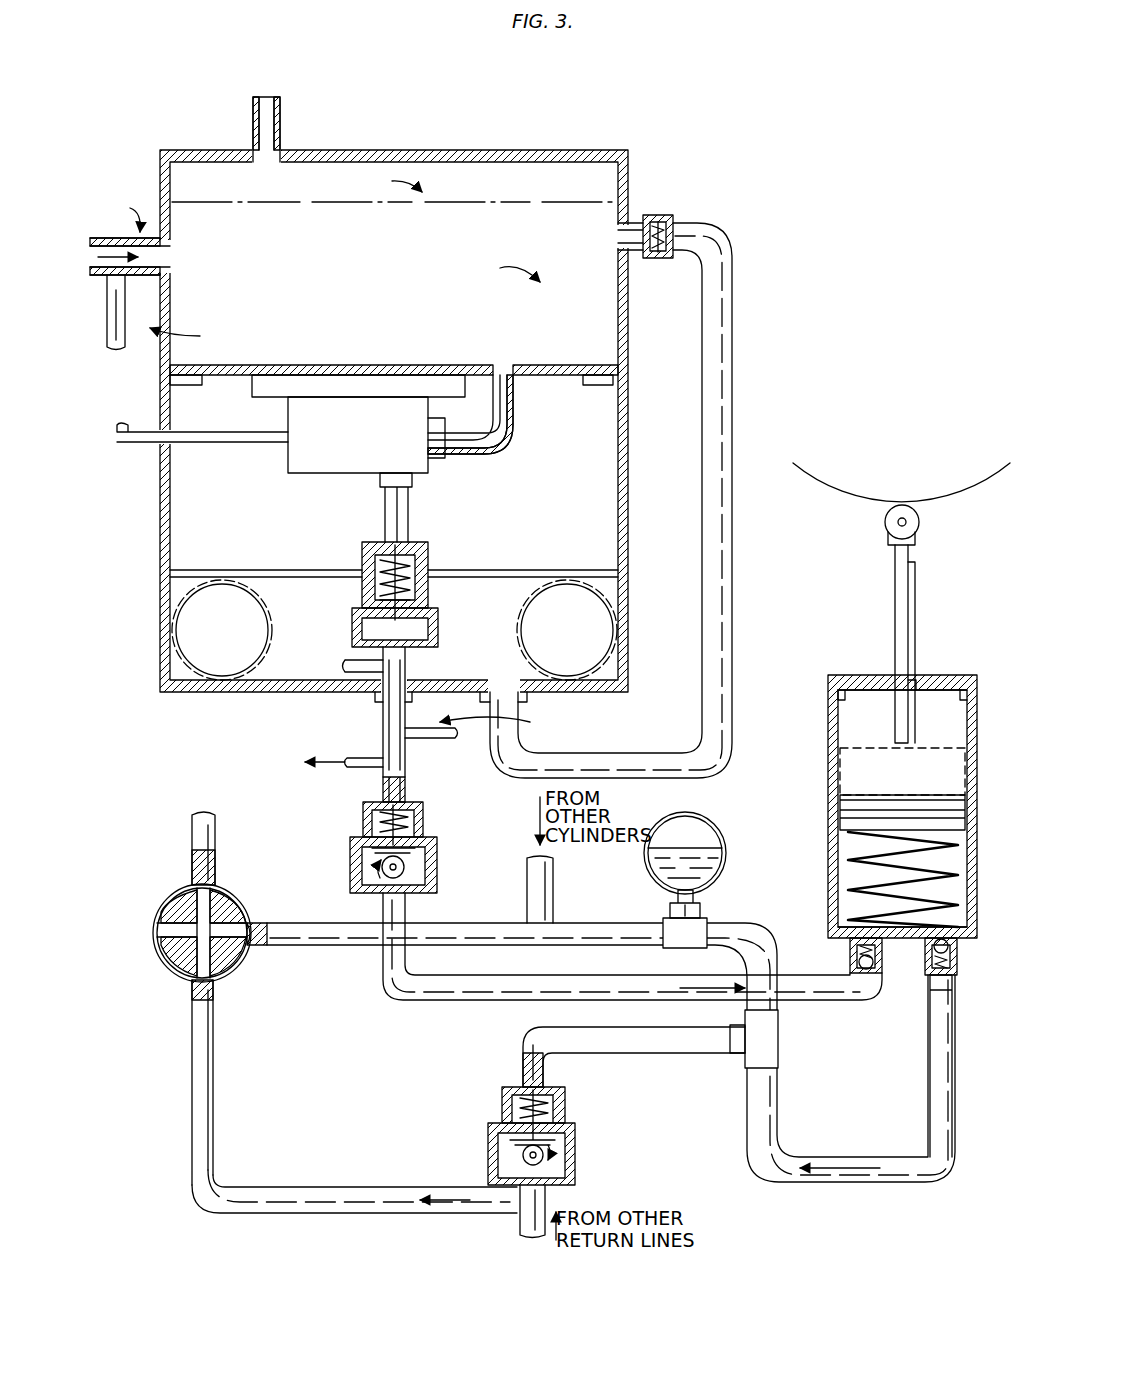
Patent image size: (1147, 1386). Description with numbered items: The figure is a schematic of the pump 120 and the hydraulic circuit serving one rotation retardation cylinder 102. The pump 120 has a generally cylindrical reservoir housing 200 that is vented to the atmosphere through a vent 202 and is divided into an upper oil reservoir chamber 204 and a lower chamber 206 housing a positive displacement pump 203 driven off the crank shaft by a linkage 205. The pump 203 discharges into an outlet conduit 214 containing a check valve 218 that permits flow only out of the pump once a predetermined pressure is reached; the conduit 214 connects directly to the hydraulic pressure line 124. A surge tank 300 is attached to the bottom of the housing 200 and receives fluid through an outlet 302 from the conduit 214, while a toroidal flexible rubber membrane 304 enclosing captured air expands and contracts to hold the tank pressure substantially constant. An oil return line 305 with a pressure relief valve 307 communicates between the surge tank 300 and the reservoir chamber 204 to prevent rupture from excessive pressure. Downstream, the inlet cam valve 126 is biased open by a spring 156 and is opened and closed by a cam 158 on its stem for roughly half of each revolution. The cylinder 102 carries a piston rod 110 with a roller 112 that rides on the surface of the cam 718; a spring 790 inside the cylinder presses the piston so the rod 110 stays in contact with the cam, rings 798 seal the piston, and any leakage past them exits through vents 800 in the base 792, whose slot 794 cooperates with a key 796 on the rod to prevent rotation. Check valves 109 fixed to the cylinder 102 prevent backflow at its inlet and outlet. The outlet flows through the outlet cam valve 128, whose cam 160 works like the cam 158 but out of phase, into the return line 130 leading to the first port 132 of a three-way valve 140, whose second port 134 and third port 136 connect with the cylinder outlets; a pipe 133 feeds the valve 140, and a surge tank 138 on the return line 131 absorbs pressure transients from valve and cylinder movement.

The reservoir housing 200 is at (433, 150).
The vent 202 is at (283, 108).
The pump 120 is at (571, 118).
The upper oil reservoir chamber 204 is at (562, 232).
The lower chamber 206 is at (592, 432).
The positive displacement pump 203 is at (434, 480).
The linkage 205 is at (187, 455).
The surge tank 300 is at (172, 593).
The flexible rubber membrane 304 is at (188, 646).
The check valve 218 is at (441, 618).
The outlet 302 is at (360, 668).
The outlet conduit 214 is at (383, 723).
The hydraulic pressure line 124 is at (406, 788).
The spring 156 is at (424, 818).
The inlet cam valve 126 is at (438, 855).
The cam 158 is at (405, 868).
The oil return line 305 is at (712, 405).
The pressure relief valve 307 is at (656, 259).
The return line 131 is at (563, 900).
The surge tank 138 is at (722, 850).
The three-way valve 140 is at (168, 980).
The third port 136 is at (252, 944).
The valve inlet pipe 133 is at (217, 830).
The second port 134 is at (192, 885).
The first port 132 is at (206, 992).
The return line 130 is at (370, 1187).
The outlet cam valve 128 is at (576, 1162).
The cam 160 is at (510, 1153).
The rotation retardation cylinder 102 is at (978, 722).
The vents 800 is at (852, 683).
The base 792 is at (870, 683).
The slot 794 is at (917, 683).
The piston rod 110 is at (905, 605).
The key 796 is at (917, 590).
The roller 112 is at (922, 522).
The cam 718 is at (817, 470).
The rings 798 is at (967, 840).
The spring 790 is at (850, 843).
The check valves 109 is at (848, 958).